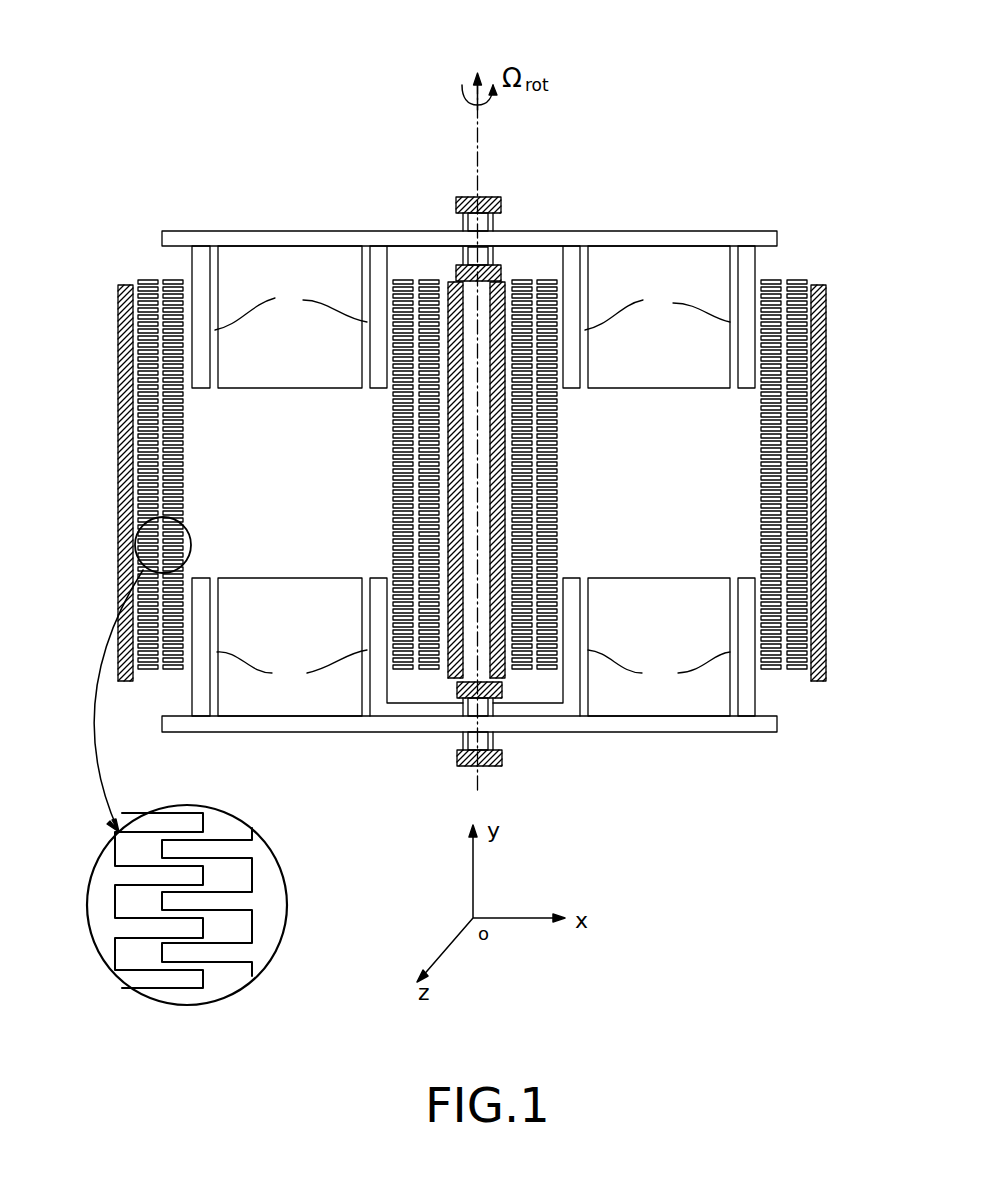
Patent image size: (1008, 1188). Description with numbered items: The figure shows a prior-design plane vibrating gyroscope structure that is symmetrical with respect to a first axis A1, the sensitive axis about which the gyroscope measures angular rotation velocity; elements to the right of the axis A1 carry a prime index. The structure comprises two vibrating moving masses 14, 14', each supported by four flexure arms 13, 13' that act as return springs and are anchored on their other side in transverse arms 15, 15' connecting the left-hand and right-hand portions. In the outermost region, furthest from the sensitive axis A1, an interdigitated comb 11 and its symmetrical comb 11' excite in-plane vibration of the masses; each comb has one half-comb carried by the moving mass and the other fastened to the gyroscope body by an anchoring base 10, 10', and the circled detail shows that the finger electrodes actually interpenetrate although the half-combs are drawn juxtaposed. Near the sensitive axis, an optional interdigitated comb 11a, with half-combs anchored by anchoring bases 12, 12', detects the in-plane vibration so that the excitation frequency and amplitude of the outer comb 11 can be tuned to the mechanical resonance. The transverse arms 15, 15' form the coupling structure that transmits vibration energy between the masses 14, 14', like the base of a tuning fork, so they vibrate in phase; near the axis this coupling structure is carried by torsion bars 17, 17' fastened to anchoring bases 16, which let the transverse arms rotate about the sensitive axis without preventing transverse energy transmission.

The anchoring base 10 is at (91, 483).
The anchoring base 10' is at (857, 483).
The interdigitated comb 11 is at (170, 651).
The interdigitated comb 11' is at (815, 499).
The interdigitated comb 11a is at (518, 292).
The anchoring base 12 is at (425, 497).
The anchoring base 12' is at (538, 492).
The flexure arm 13 is at (291, 466).
The flexure arm 13' is at (657, 483).
The moving mass 14 is at (310, 595).
The moving mass 14' is at (660, 594).
The transverse arm 15 is at (469, 469).
The transverse arm 15' is at (700, 474).
The anchoring base 16 is at (470, 198).
The torsion bar 17 is at (440, 492).
The torsion bar 17' is at (537, 461).
The first axis A1 is at (482, 130).